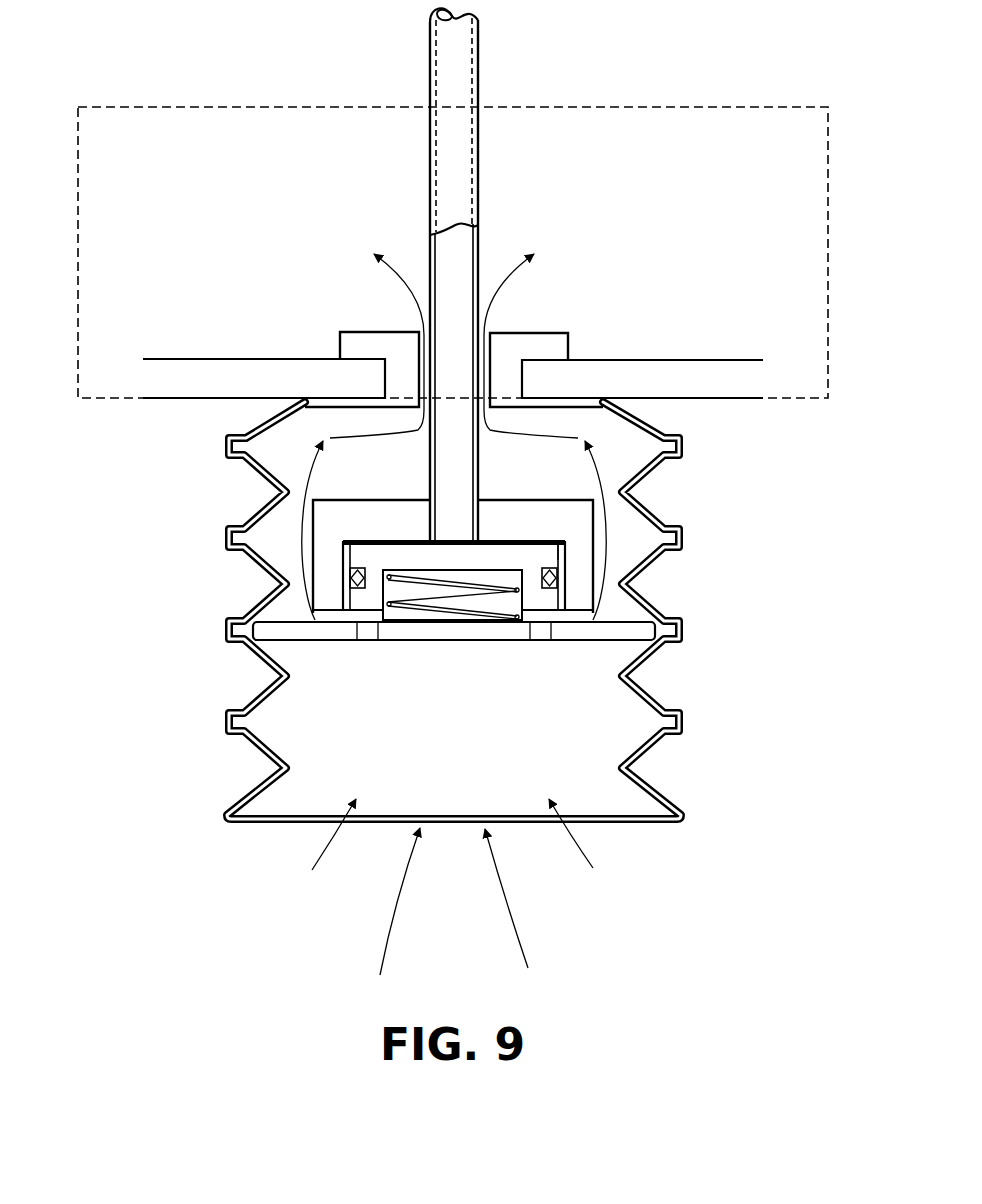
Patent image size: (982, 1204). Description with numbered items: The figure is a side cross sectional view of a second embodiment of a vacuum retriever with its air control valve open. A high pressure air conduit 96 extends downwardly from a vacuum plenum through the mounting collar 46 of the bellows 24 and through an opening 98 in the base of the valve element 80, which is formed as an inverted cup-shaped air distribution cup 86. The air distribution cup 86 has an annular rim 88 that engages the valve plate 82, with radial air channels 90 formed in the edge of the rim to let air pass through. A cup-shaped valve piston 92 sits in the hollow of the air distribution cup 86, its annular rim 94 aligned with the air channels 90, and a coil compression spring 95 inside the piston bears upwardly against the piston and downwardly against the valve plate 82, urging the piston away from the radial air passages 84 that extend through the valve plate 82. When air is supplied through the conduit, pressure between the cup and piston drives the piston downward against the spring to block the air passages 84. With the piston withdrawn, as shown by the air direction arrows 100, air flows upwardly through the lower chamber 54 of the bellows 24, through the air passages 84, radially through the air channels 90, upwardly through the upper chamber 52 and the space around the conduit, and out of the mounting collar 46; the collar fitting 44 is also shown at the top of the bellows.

The bellows 24 is at (692, 574).
The boss fitting 44 is at (488, 330).
The mounting collar 46 is at (540, 342).
The upper chamber 52 is at (640, 461).
The lower chamber 54 is at (473, 789).
The valve element 80 is at (352, 497).
The valve plate 82 is at (428, 632).
The radial air passages 84 is at (375, 625).
The air distribution cup 86 is at (550, 512).
The annular rim 88 is at (323, 563).
The radial air channels 90 is at (331, 614).
The valve piston 92 is at (372, 558).
The annular rim 94 is at (530, 598).
The coil compression spring 95 is at (452, 622).
The high pressure air conduit 96 is at (476, 243).
The opening 98 is at (477, 522).
The air direction arrows 100 is at (398, 283).